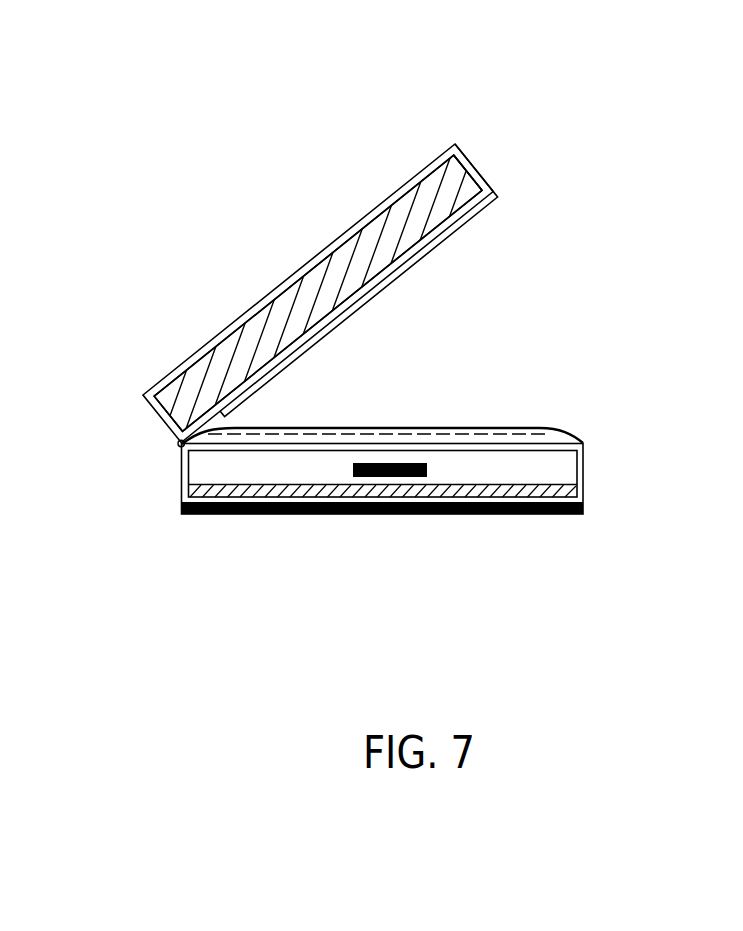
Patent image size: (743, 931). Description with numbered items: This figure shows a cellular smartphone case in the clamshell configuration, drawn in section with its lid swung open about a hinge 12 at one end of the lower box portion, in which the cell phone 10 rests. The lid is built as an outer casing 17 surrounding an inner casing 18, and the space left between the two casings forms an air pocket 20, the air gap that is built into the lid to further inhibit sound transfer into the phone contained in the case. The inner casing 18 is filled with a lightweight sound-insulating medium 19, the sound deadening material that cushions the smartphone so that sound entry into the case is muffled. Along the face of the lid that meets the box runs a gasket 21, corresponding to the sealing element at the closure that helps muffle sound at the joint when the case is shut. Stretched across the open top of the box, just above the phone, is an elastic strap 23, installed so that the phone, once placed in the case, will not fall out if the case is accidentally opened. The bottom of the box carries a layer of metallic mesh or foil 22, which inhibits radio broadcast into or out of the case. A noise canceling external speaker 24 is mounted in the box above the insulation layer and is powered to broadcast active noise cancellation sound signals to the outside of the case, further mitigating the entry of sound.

The cell phone 10 is at (548, 435).
The hinge 12 is at (178, 444).
The outer casing 17 is at (492, 192).
The inner casing 18 is at (442, 168).
The lightweight SI medium 19 is at (325, 288).
The air pocket 20 is at (475, 177).
The gasket 21 is at (409, 268).
The metallic mesh or foil 22 is at (546, 512).
The elastic strap 23 is at (430, 427).
The noise canceling external speaker 24 is at (382, 477).